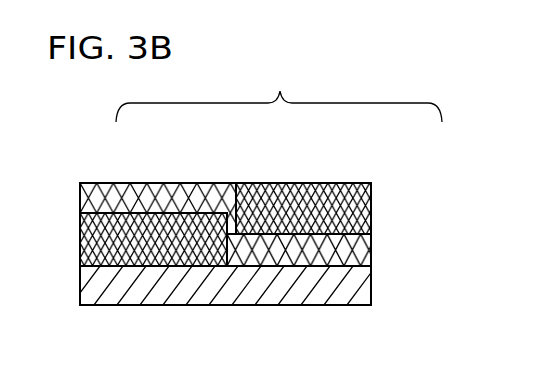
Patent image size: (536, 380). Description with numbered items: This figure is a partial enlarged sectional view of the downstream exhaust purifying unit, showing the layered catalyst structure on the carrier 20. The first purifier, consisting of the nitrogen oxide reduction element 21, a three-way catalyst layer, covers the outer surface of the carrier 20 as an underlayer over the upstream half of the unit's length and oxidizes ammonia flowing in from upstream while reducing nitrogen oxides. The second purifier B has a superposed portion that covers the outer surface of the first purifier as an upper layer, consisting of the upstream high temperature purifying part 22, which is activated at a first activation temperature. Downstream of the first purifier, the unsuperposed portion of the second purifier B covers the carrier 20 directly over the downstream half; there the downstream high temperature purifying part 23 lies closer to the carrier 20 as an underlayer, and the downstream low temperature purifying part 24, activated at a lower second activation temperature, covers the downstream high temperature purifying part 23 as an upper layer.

The second purifier B is at (279, 87).
The carrier 20 is at (228, 288).
The nitrogen oxide reduction element 21 is at (90, 238).
The upstream high temperature purifying part 22 is at (157, 192).
The downstream high temperature purifying part 23 is at (362, 249).
The downstream low temperature purifying part 24 is at (297, 198).